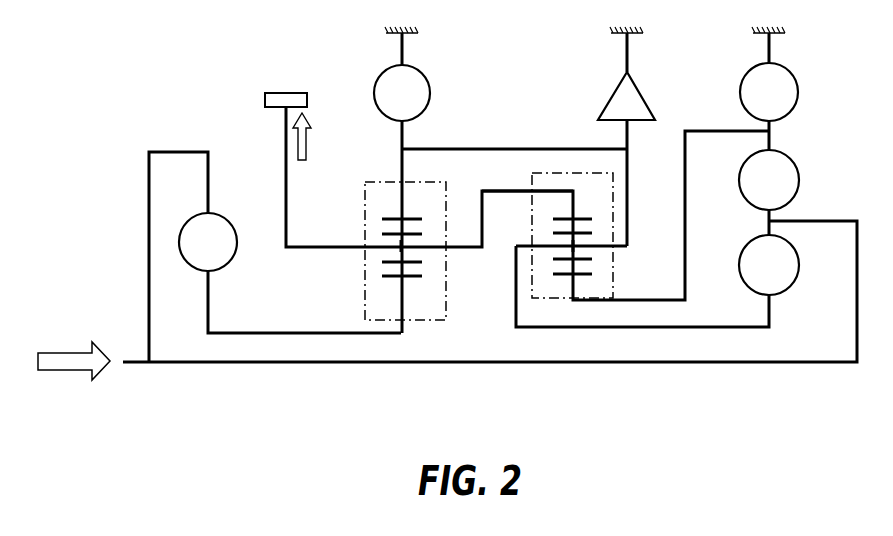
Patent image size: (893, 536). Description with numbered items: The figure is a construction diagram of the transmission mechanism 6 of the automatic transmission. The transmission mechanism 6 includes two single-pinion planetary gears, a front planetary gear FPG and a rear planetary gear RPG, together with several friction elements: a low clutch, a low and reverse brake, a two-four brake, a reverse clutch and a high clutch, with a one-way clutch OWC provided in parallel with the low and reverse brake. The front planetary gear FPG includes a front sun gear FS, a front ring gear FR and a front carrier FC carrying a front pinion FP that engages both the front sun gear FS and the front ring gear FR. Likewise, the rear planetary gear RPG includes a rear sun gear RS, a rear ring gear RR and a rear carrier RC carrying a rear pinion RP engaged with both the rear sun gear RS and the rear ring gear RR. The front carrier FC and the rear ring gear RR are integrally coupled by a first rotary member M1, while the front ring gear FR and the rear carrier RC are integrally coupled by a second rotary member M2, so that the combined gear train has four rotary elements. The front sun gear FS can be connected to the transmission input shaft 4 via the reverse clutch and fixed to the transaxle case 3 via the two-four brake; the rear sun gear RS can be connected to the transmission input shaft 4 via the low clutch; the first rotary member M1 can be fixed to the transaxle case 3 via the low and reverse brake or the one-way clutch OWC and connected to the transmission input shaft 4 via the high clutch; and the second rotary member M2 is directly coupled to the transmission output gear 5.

The transaxle case 3 is at (411, 36).
The transmission input shaft 4 is at (398, 363).
The transmission output gear 5 is at (286, 92).
The transmission mechanism 6 is at (181, 57).
The first rotary member M1 is at (477, 147).
The second rotary member M2 is at (507, 190).
The rear planetary gear RPG is at (369, 179).
The rear ring gear RR is at (392, 226).
The rear pinion RP is at (392, 264).
The rear carrier RC is at (413, 253).
The rear sun gear RS is at (407, 271).
The front planetary gear FPG is at (594, 167).
The front ring gear FR is at (583, 222).
The front carrier FC is at (592, 249).
The front pinion FP is at (557, 262).
The front sun gear FS is at (587, 268).
The one-way clutch OWC is at (626, 136).